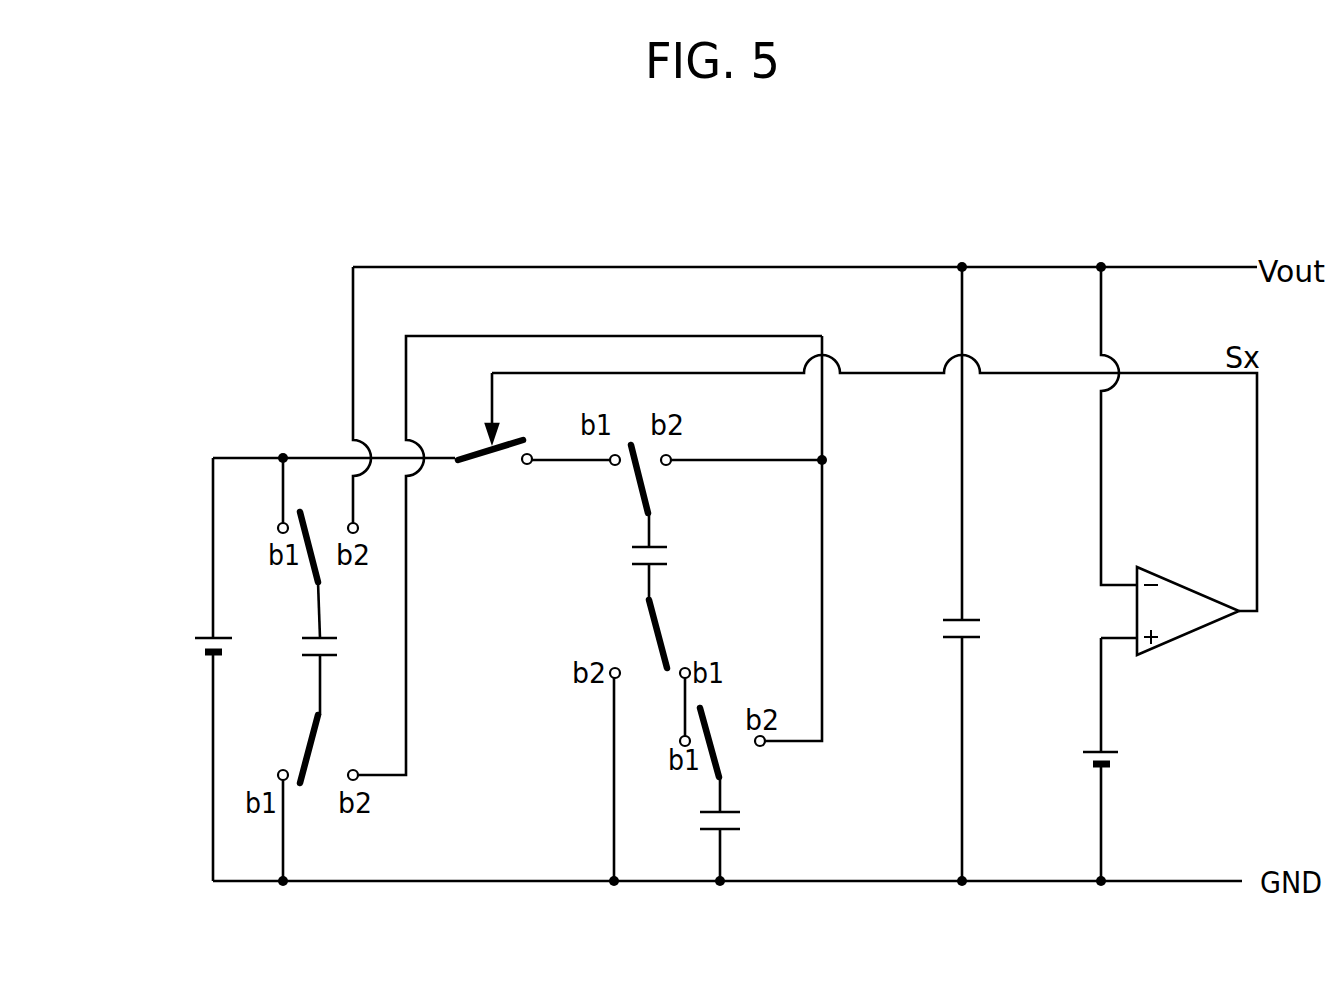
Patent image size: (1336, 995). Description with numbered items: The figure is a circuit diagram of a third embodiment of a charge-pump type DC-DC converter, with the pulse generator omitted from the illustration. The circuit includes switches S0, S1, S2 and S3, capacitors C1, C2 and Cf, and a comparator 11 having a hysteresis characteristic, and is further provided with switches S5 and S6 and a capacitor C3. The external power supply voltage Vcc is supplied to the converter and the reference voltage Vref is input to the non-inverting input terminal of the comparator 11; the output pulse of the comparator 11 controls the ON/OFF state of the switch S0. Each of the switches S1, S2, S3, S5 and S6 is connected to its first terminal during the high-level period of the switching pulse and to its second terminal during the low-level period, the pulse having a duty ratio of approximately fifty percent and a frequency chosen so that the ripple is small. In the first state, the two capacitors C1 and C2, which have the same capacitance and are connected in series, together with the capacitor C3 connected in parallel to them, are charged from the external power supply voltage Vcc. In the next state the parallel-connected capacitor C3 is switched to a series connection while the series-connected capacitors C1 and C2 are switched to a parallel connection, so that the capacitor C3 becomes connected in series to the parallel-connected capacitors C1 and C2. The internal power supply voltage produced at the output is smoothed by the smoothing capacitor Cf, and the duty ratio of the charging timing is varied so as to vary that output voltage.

The comparator 11 is at (1181, 632).
The switch S0 is at (534, 467).
The switch S1 is at (645, 478).
The switch S2 is at (656, 639).
The switch S3 is at (714, 742).
The switch S5 is at (318, 547).
The switch S6 is at (312, 749).
The capacitor C1 is at (632, 572).
The capacitor C2 is at (740, 829).
The capacitor C3 is at (301, 676).
The capacitor Cf is at (980, 647).
The external power supply voltage Vcc is at (180, 637).
The reference voltage Vref is at (1137, 761).